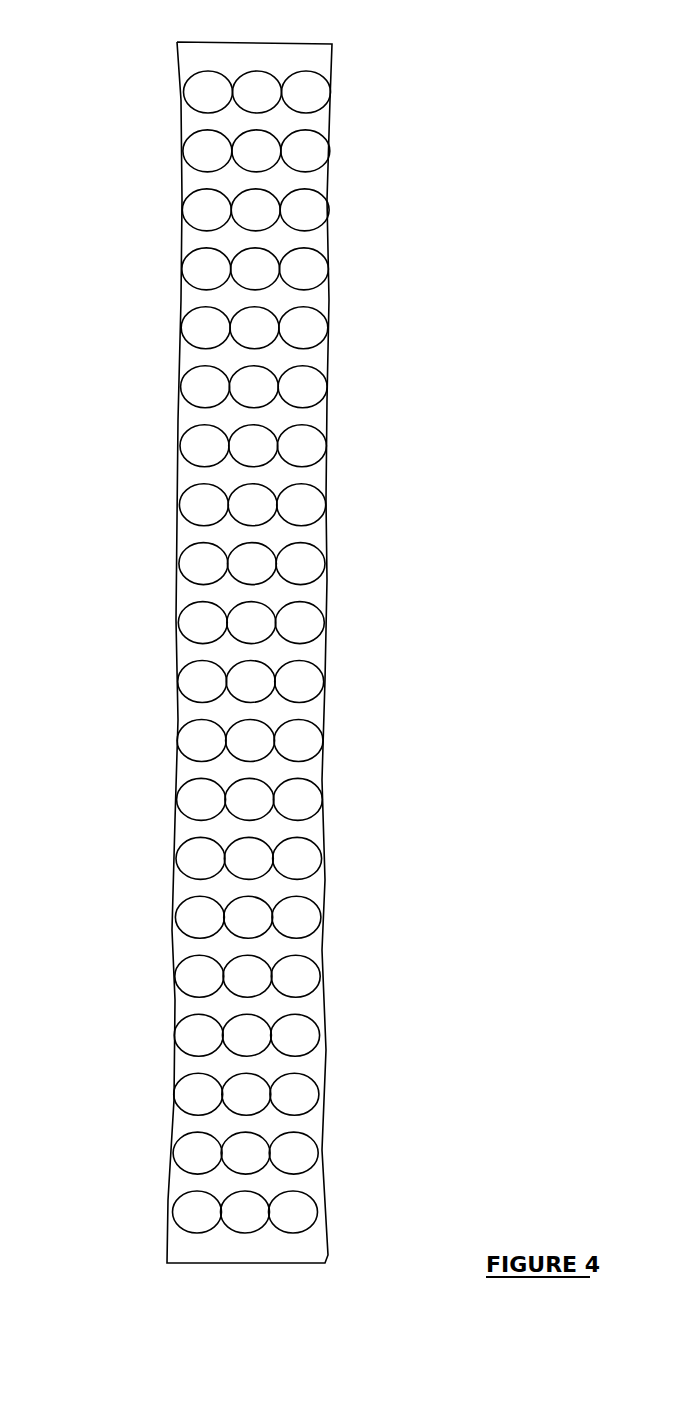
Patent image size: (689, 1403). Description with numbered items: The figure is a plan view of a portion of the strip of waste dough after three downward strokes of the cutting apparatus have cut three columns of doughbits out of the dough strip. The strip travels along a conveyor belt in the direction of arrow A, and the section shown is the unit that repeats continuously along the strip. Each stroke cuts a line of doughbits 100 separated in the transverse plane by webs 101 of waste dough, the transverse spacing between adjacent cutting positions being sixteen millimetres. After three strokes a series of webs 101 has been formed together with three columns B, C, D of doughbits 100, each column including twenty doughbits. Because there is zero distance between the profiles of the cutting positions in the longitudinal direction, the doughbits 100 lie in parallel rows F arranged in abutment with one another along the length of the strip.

The doughbits 100 is at (305, 112).
The webs of waste dough 101 is at (198, 122).
The first column of doughbits B is at (200, 80).
The second column of doughbits C is at (253, 80).
The third column of doughbits D is at (307, 80).
The parallel rows of doughbits F is at (396, 661).
The direction of travel arrow A is at (145, 1280).